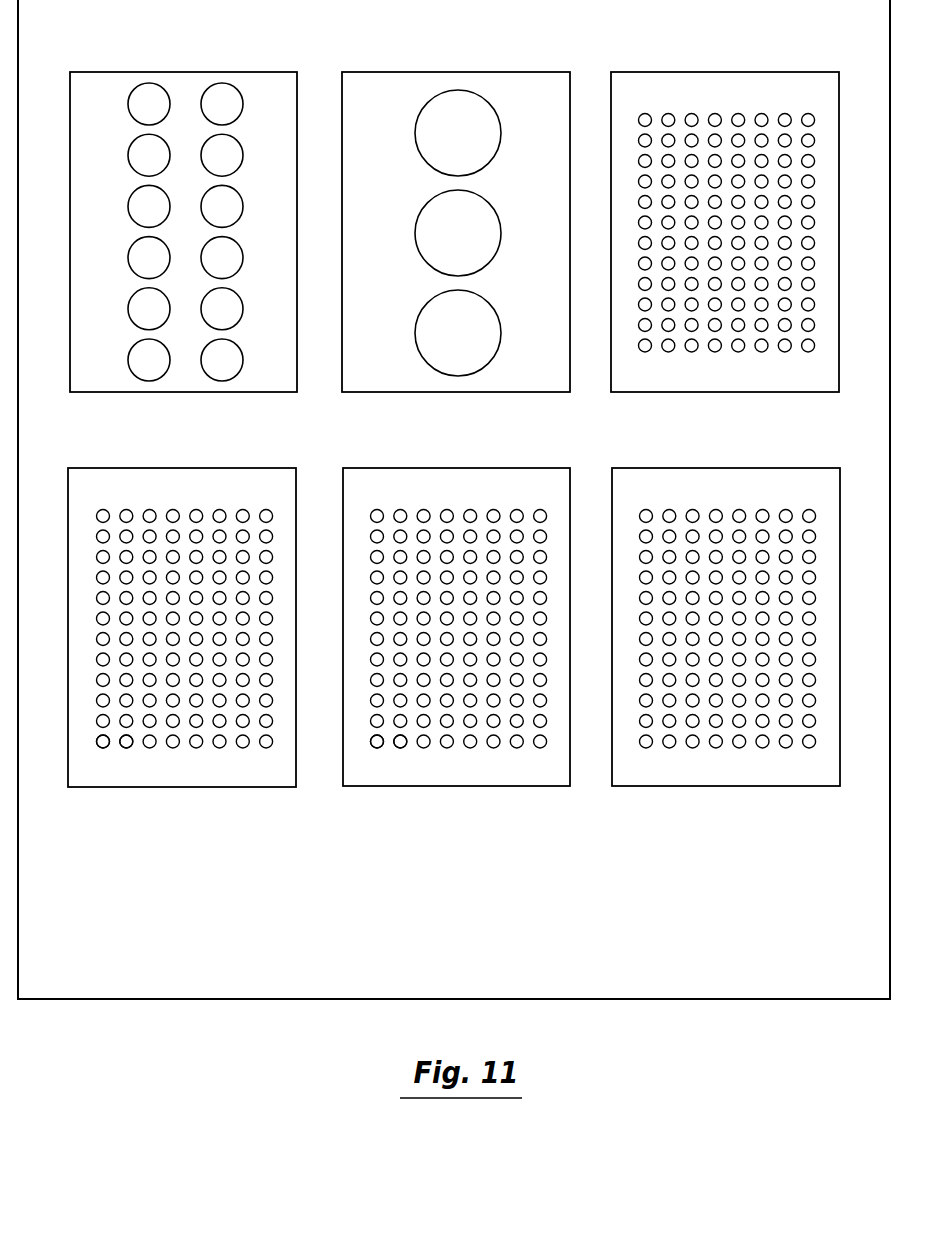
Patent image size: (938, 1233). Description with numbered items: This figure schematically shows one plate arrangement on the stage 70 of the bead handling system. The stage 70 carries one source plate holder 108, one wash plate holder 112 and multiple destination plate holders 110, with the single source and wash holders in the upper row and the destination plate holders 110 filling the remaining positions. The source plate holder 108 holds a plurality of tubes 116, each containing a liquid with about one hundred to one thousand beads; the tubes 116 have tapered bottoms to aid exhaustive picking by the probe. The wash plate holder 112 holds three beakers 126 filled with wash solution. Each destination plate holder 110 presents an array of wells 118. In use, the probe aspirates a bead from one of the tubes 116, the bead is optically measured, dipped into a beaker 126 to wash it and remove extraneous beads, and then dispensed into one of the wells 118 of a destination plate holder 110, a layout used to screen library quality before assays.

The stage 70 is at (708, 931).
The source plate holder 108 is at (198, 197).
The wash plate holder 112 is at (463, 199).
The destination plate holder 110 is at (811, 90).
The tube 116 is at (130, 357).
The beaker 126 is at (416, 336).
The well 118 is at (103, 749).